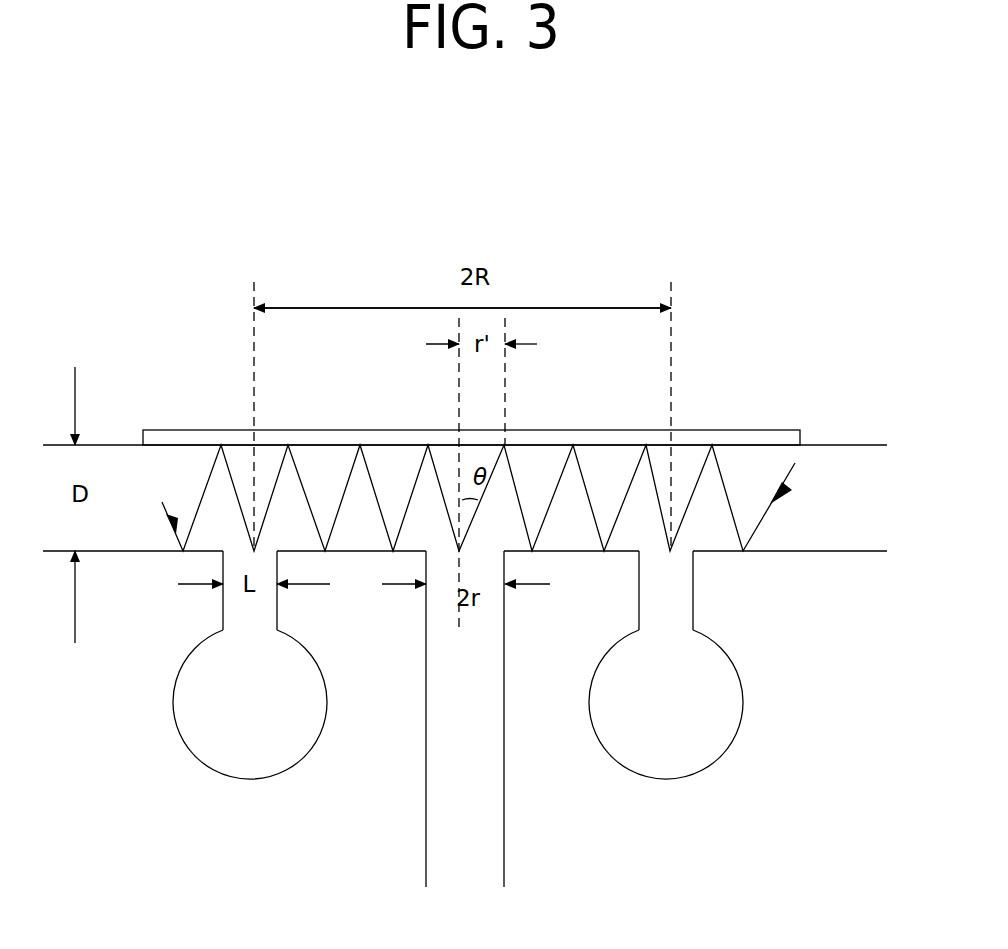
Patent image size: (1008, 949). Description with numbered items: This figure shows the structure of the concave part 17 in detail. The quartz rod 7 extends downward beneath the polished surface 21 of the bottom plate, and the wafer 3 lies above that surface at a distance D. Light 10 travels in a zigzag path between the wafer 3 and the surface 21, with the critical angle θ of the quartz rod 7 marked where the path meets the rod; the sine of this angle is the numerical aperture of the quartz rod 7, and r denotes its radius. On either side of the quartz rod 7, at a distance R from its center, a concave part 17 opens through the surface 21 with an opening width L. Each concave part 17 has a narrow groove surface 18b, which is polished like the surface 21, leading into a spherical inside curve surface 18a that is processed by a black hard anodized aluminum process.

The wafer 3 is at (768, 430).
The quartz rod 7 is at (426, 830).
The incident light 10 is at (780, 485).
The concave part 17 is at (173, 698).
The inside curve surface 18a is at (622, 762).
The groove surface 18b is at (693, 598).
The surface of the bottom plate 21 is at (828, 552).